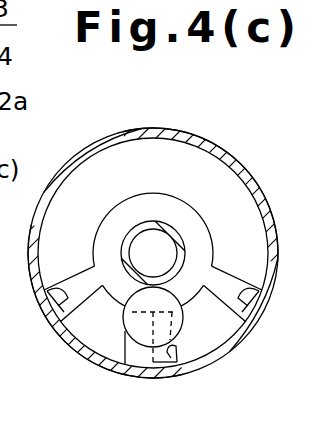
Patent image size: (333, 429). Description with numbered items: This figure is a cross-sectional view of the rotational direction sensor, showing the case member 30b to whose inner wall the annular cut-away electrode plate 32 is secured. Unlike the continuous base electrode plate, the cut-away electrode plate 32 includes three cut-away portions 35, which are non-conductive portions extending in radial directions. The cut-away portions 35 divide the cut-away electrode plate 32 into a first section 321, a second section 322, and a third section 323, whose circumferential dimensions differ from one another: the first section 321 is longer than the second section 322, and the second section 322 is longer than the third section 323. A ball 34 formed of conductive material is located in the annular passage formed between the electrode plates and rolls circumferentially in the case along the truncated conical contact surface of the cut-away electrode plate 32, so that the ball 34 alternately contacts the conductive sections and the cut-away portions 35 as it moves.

The cut-away electrode plate 32 is at (235, 183).
The case member 30b is at (218, 151).
The first section 321 is at (162, 150).
The second section 322 is at (88, 330).
The third section 323 is at (213, 333).
The cut-away portions 35 is at (266, 272).
The ball 34 is at (128, 363).